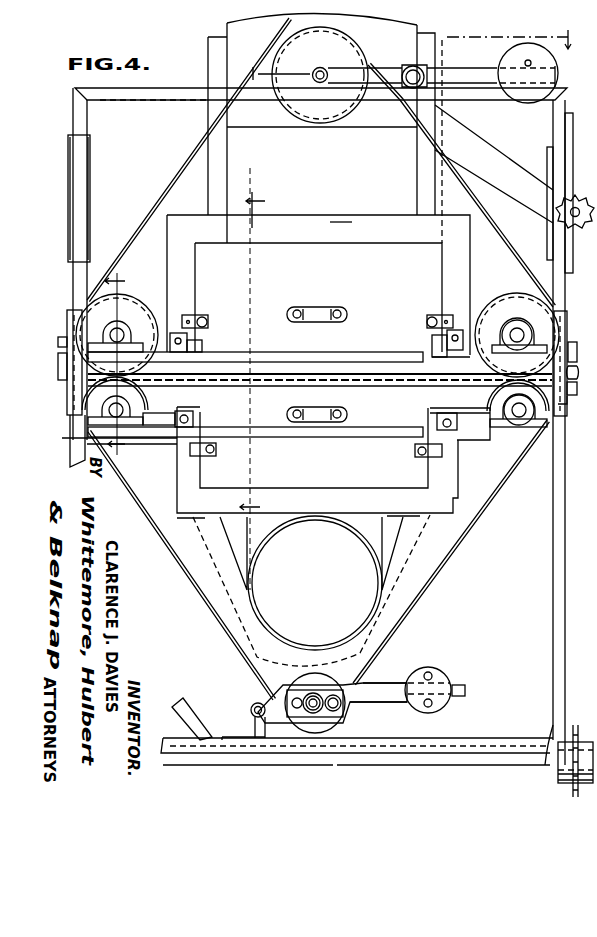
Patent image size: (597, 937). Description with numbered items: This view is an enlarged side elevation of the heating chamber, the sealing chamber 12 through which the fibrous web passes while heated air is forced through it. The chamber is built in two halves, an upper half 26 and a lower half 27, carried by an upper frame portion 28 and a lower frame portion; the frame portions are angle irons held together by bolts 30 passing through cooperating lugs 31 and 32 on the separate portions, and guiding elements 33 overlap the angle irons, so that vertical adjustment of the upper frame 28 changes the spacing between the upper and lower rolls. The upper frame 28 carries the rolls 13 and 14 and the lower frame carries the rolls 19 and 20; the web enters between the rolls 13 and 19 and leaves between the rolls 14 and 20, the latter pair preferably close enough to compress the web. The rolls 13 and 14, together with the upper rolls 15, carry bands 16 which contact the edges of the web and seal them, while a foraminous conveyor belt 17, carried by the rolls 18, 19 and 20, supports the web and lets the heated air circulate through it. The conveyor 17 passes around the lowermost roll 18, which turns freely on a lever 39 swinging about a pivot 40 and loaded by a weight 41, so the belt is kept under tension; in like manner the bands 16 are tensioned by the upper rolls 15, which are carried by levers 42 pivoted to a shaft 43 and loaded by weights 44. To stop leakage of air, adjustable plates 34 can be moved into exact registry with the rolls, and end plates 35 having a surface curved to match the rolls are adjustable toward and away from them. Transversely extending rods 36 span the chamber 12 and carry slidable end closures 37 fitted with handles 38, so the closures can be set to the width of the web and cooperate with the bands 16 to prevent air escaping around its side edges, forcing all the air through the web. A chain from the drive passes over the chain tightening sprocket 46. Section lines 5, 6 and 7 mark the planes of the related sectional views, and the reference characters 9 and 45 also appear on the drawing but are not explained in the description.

The section line 5- 5 is at (247, 379).
The section line 6- 6 is at (411, 56).
The section line 7- 7 is at (118, 364).
The frame upright post 9 is at (548, 528).
The sealing chamber 12 is at (301, 207).
The roll 13 is at (508, 296).
The roll 14 is at (138, 294).
The upper rolls 15 is at (283, 107).
The bands 16 is at (178, 186).
The foraminous conveyor belt 17 is at (453, 552).
The lowermost roll 18 is at (333, 682).
The roll 19 is at (512, 436).
The roll 20 is at (150, 401).
The upper half of heating chamber 26 is at (340, 222).
The lower half of heating chamber 27 is at (455, 500).
The upper frame portion 28 is at (557, 307).
The bolts 30 is at (581, 391).
The lug 31 is at (574, 352).
The lug 32 is at (582, 375).
The guiding elements 33 is at (563, 402).
The adjustable plates 34 is at (450, 356).
The end plates 35 is at (462, 368).
The transversely extending rods 36 is at (208, 318).
The end closures 37 is at (389, 262).
The handles 38 is at (320, 312).
The lever 39 is at (388, 688).
The pivot 40 is at (254, 705).
The weight 41 is at (443, 680).
The levers 42 is at (447, 71).
The shaft 43 is at (412, 68).
The weights 44 is at (524, 106).
The pivot bolt 45 is at (320, 67).
The chain tightening sprocket 46 is at (578, 197).